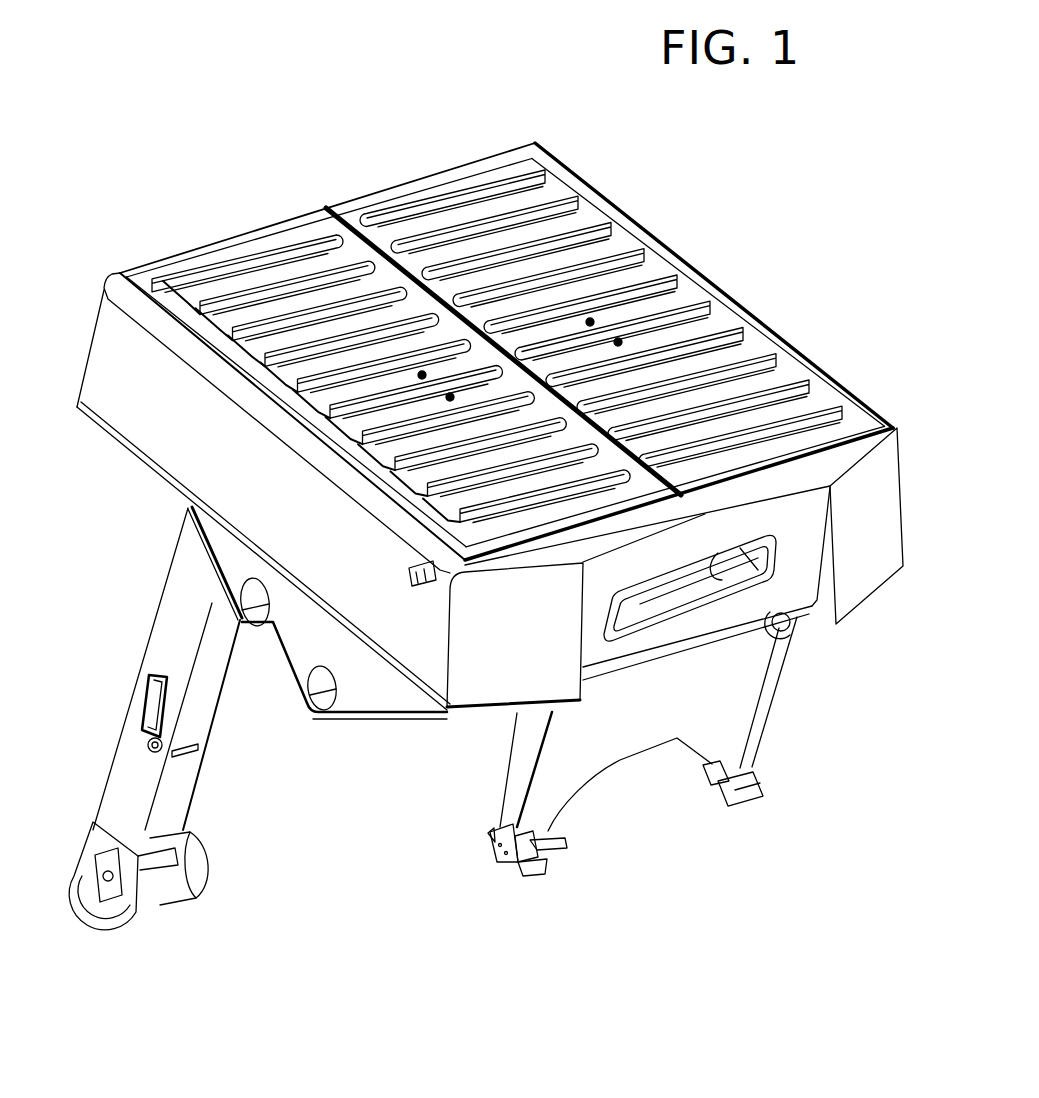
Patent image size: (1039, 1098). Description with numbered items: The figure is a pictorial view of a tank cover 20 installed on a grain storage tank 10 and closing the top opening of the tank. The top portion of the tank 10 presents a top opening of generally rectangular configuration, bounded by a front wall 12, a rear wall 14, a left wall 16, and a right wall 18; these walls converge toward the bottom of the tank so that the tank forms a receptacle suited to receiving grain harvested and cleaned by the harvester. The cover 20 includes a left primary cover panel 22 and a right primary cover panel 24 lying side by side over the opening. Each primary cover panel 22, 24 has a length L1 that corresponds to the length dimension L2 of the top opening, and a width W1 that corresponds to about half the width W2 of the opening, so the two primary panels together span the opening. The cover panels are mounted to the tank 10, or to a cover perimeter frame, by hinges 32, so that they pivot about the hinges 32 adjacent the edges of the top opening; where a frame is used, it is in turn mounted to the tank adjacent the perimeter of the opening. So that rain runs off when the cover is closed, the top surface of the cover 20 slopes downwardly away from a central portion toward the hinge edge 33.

The grain storage tank 10 is at (487, 690).
The front wall 12 is at (853, 576).
The rear wall 14 is at (93, 330).
The left wall 16 is at (903, 487).
The right wall 18 is at (178, 460).
The tank cover 20 is at (425, 178).
The left primary cover panel 22 is at (488, 165).
The right primary cover panel 24 is at (253, 237).
The hinges 32 is at (602, 207).
The hinge edge 33 is at (648, 230).
The width of primary cover panel W1 is at (466, 316).
The width of top opening W2 is at (748, 344).
The length of primary cover panel L1 is at (527, 523).
The length dimension of top opening L2 is at (567, 517).